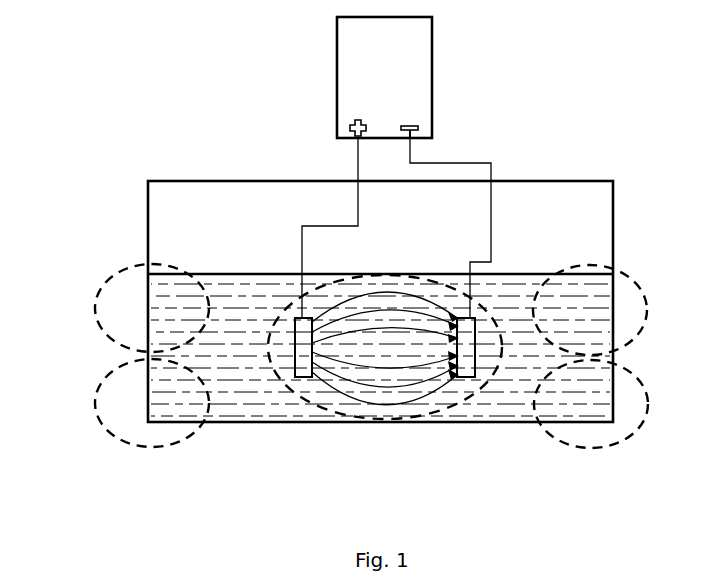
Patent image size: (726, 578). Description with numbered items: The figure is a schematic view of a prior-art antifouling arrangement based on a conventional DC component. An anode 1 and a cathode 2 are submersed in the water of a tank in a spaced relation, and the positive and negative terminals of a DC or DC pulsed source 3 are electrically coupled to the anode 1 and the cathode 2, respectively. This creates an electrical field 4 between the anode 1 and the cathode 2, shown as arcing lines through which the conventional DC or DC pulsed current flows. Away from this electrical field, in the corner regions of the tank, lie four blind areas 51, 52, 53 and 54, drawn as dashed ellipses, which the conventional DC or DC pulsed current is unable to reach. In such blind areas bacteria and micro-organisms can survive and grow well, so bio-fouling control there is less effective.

The anode 1 is at (298, 347).
The cathode 2 is at (475, 346).
The DC or DC pulsed source 3 is at (403, 60).
The electrical field 4 is at (385, 388).
The blind area 51 is at (162, 310).
The blind area 52 is at (168, 395).
The blind area 53 is at (590, 297).
The blind area 54 is at (590, 392).